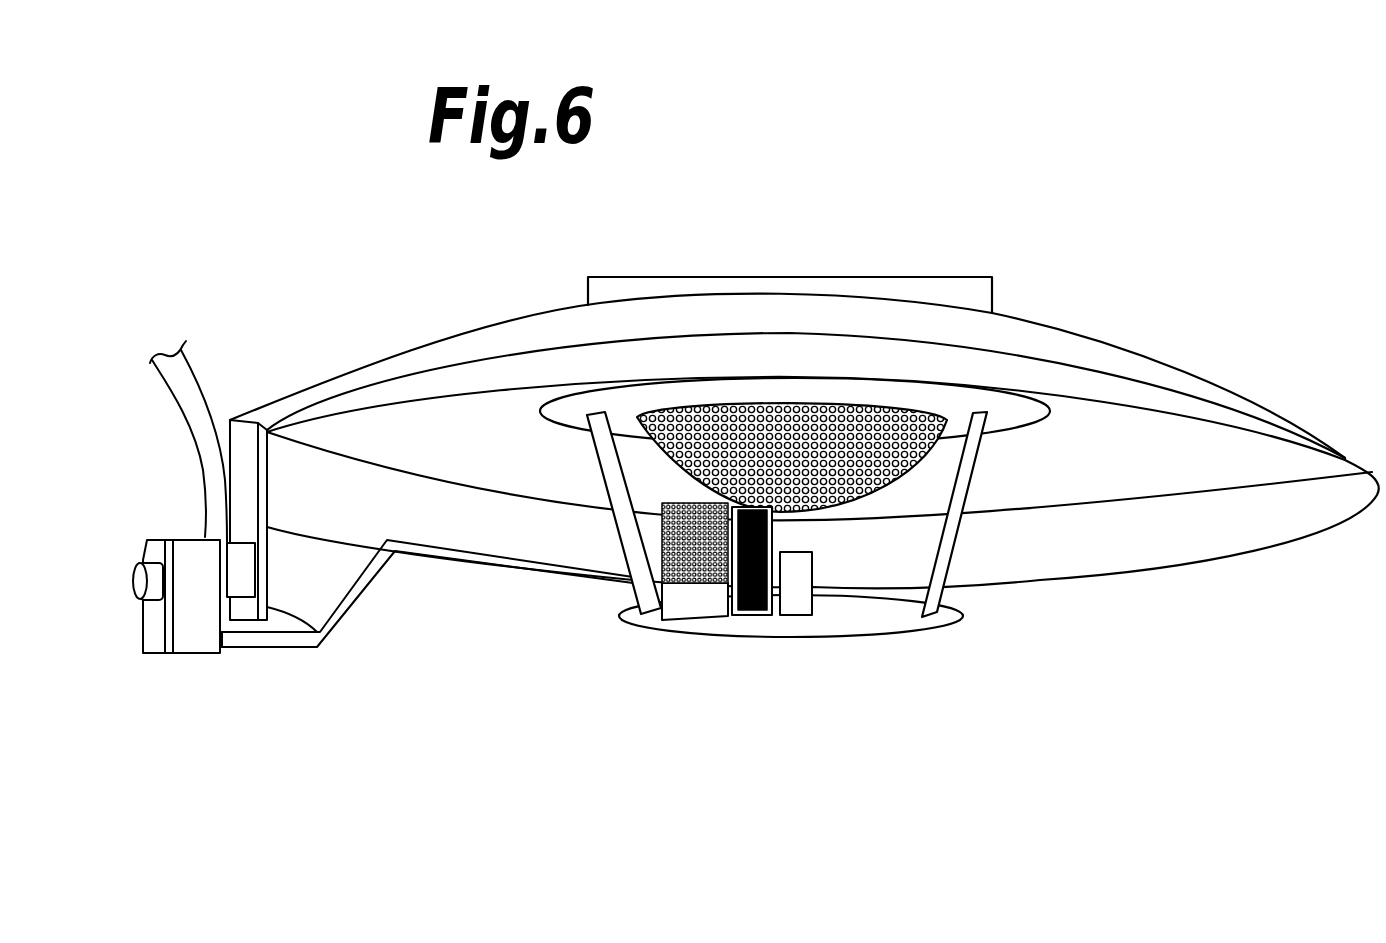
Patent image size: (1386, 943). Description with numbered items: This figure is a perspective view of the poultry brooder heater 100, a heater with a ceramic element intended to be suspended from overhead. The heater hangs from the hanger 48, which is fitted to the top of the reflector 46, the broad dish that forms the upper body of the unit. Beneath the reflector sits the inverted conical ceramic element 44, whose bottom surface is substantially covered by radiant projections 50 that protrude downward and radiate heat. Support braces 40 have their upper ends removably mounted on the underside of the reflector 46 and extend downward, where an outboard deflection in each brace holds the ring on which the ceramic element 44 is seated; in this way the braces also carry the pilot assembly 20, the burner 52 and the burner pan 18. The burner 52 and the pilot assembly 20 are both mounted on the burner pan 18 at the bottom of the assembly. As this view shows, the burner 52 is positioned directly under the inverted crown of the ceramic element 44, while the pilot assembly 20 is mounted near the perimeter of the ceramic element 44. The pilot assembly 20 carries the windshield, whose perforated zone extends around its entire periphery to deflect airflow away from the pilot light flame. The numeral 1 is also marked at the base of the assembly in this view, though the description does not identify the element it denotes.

The sensor/base unit 1 is at (703, 628).
The burner pan 18 is at (867, 610).
The pilot assembly 20 is at (755, 615).
The support braces 40 is at (621, 515).
The ceramic element 44 is at (1010, 413).
The reflector 46 is at (1202, 528).
The hanger 48 is at (917, 277).
The radiant projections 50 is at (781, 397).
The burner 52 is at (795, 615).
The poultry brooder heater 100 is at (1170, 299).